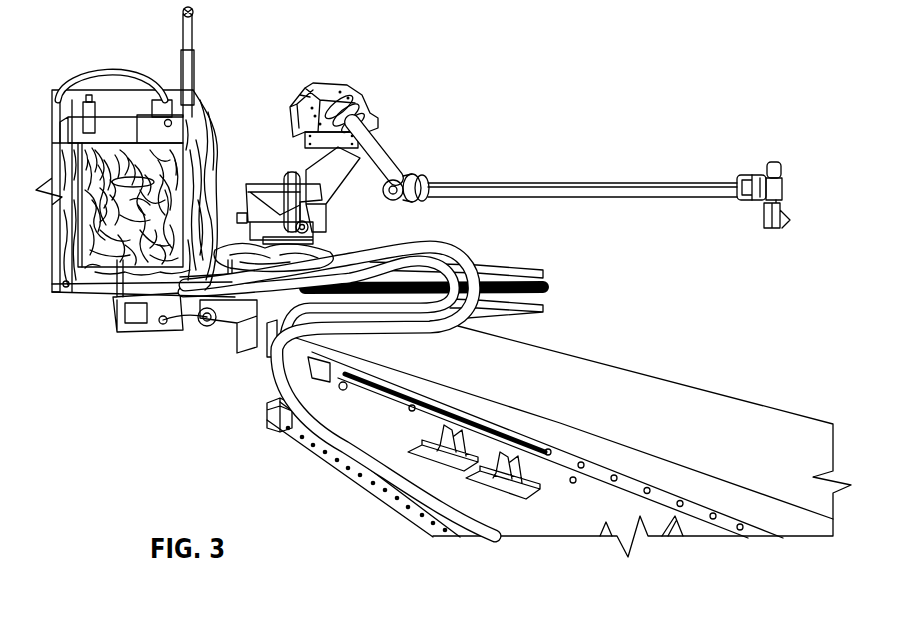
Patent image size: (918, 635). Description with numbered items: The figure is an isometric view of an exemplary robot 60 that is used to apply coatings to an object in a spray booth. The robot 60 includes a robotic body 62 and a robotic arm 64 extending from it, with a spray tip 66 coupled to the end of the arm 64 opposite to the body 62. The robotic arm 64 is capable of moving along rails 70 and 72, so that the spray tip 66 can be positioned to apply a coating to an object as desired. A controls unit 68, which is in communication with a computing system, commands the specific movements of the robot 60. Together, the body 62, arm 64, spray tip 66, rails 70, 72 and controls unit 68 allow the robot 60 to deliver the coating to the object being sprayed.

The robot 60 is at (458, 166).
The robotic body 62 is at (298, 92).
The robotic arm 64 is at (575, 187).
The spray tip 66 is at (757, 217).
The controls unit 68 is at (107, 88).
The rail 70 is at (538, 318).
The rail 72 is at (615, 365).